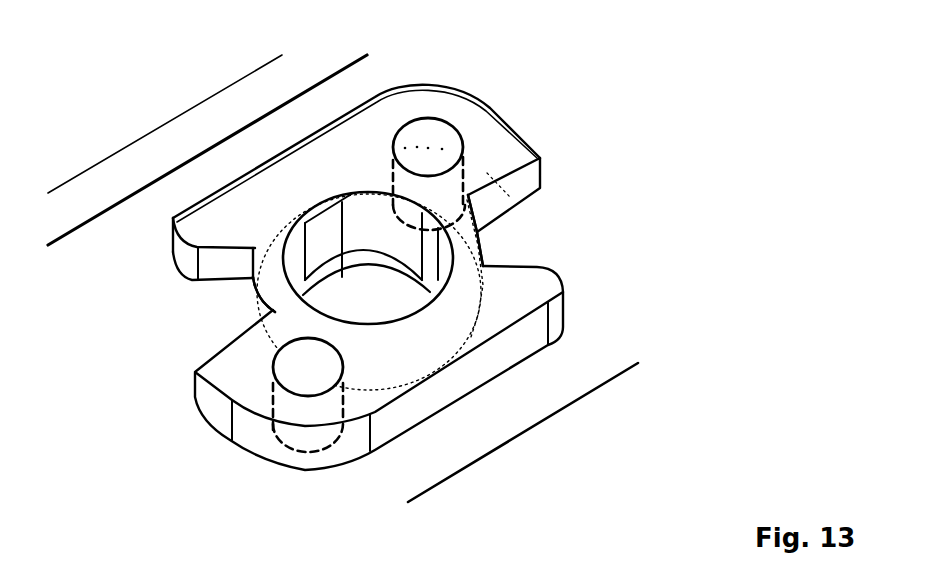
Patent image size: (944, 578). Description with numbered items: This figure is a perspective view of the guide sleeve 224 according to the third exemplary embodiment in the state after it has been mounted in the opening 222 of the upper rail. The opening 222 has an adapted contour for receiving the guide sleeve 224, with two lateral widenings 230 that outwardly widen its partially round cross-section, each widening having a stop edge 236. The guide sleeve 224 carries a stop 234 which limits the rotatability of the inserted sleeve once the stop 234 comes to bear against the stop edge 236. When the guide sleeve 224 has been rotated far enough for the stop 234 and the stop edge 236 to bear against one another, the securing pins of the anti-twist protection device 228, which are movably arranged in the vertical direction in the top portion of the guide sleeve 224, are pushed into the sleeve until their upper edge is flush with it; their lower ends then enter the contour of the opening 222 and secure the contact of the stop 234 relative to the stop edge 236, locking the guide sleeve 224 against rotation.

The opening 222 is at (483, 285).
The guide sleeve 224 is at (377, 130).
The anti-twist protection device 228 is at (432, 132).
The lateral widening 230 is at (490, 167).
The stop 234 is at (478, 236).
The stop edge 236 is at (368, 253).